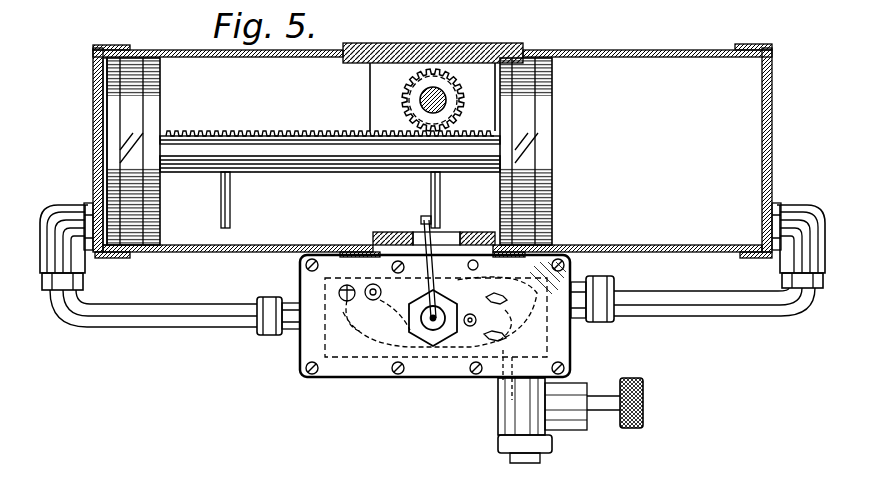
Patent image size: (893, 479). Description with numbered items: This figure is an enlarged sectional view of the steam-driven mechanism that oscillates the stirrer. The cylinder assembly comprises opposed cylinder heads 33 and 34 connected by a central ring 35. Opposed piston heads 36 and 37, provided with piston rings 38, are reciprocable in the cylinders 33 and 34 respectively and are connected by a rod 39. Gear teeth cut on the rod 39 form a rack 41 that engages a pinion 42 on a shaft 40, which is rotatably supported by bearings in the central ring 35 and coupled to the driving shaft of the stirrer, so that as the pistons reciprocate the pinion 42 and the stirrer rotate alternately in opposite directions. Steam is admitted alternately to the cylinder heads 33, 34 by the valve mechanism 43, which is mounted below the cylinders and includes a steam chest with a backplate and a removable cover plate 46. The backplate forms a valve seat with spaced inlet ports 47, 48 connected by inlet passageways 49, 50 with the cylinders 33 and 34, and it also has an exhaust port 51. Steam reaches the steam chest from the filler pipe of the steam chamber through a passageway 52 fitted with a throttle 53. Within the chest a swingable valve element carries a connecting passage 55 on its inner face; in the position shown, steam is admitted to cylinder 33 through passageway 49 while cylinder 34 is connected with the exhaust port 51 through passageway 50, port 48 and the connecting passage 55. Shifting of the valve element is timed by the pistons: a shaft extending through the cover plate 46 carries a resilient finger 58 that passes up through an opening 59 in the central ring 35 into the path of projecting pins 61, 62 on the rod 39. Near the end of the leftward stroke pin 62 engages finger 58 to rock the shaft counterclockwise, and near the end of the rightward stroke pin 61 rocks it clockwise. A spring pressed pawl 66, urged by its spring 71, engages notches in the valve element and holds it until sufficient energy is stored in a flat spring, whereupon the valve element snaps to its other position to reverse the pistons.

The cylinder head 33 is at (173, 51).
The cylinder head 34 is at (659, 49).
The central ring 35 is at (462, 50).
The piston head 36 is at (113, 123).
The piston head 37 is at (540, 128).
The piston rings 38 is at (133, 119).
The rod 39 is at (309, 173).
The shaft 40 is at (432, 93).
The rack 41 is at (289, 130).
The pinion 42 is at (402, 101).
The valve mechanism 43 is at (330, 382).
The cover plate 46 is at (452, 379).
The inlet port 47 is at (508, 337).
The inlet port 48 is at (500, 300).
The inlet passageway 49 is at (165, 330).
The inlet passageway 50 is at (693, 312).
The exhaust port 51 is at (526, 406).
The passageway 52 is at (512, 452).
The throttle 53 is at (645, 399).
The connecting passage 55 is at (478, 268).
The resilient finger 58 is at (421, 222).
The opening 59 is at (455, 240).
The projecting pin 61 is at (231, 195).
The projecting pin 62 is at (431, 188).
The spring pressed pawl 66 is at (383, 300).
The spring 71 is at (362, 334).